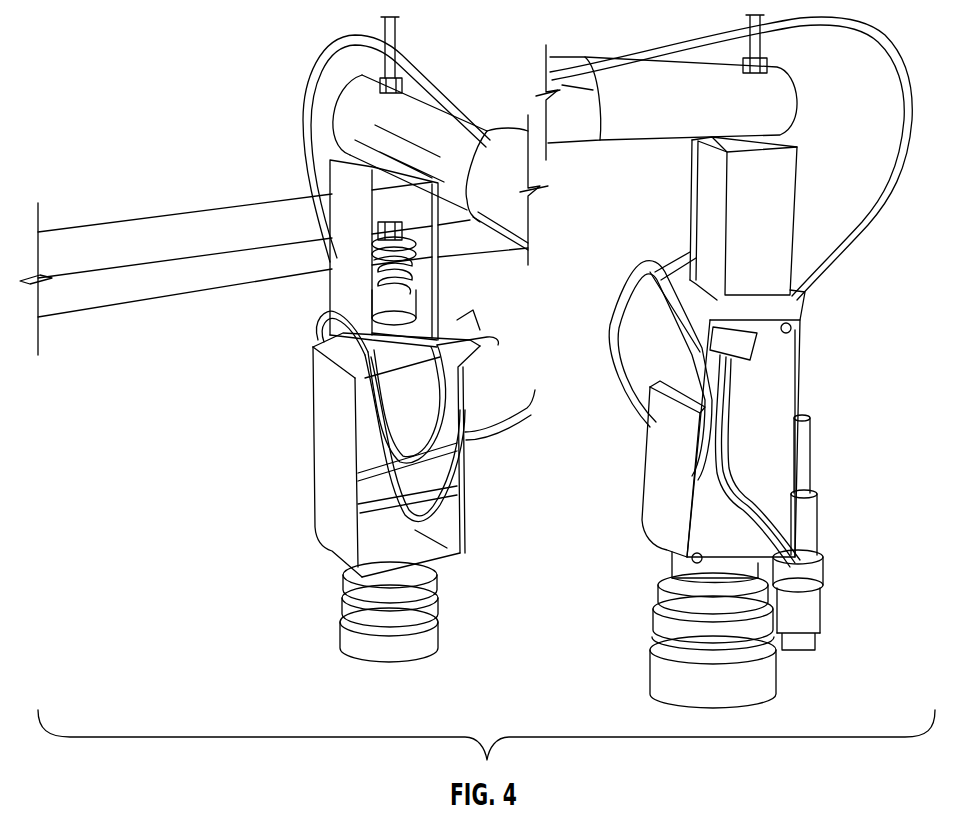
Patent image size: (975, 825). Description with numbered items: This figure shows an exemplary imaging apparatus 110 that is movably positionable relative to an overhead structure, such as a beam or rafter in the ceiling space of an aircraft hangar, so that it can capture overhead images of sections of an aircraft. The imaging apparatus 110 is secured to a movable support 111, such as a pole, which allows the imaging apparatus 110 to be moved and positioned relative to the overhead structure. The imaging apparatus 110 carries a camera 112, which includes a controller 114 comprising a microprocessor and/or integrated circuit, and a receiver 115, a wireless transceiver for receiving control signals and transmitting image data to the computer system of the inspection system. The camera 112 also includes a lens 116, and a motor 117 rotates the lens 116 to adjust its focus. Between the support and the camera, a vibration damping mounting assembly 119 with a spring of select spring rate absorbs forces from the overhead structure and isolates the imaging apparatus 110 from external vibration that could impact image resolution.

The imaging apparatus 110 is at (340, 625).
The movable support 111 is at (783, 100).
The camera 112 is at (680, 577).
The controller 114 is at (440, 555).
The receiver 115 is at (742, 343).
The lens 116 is at (765, 680).
The motor 117 is at (808, 603).
The vibration damping mounting assembly 119 is at (388, 312).